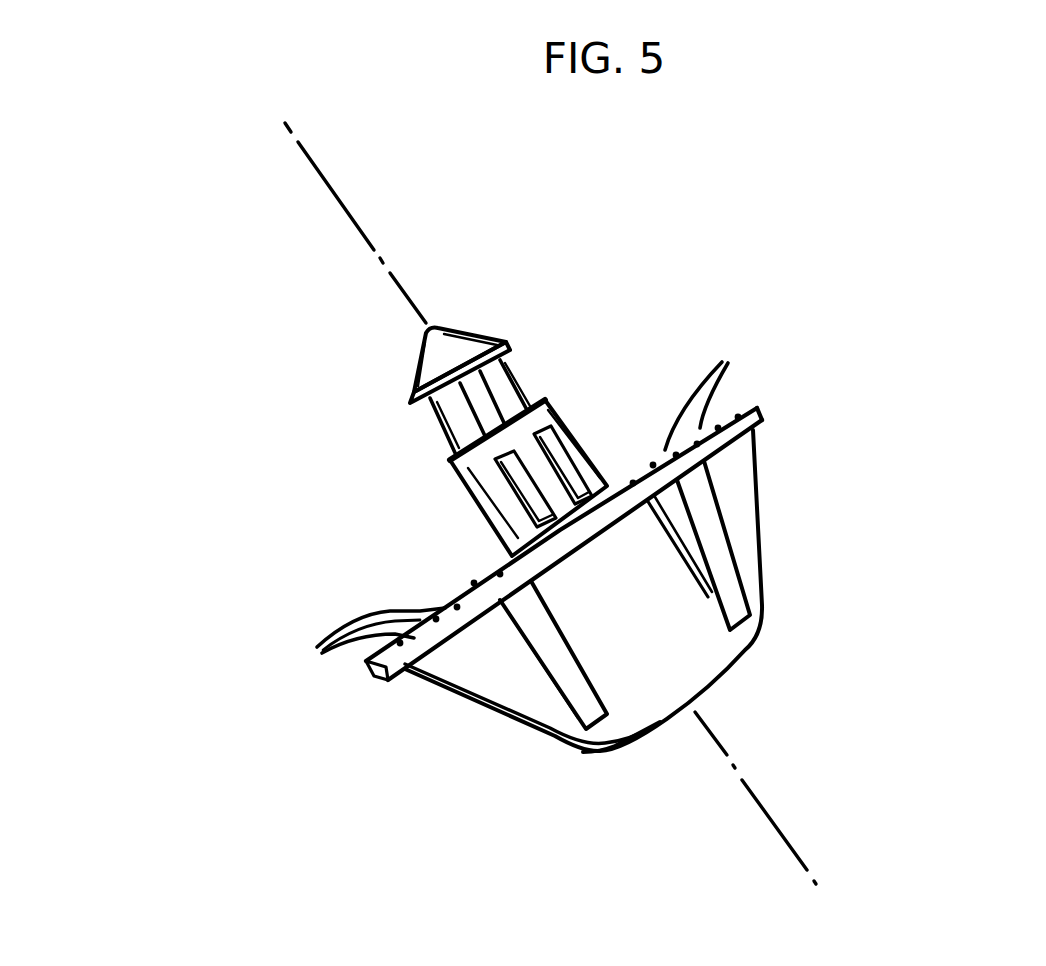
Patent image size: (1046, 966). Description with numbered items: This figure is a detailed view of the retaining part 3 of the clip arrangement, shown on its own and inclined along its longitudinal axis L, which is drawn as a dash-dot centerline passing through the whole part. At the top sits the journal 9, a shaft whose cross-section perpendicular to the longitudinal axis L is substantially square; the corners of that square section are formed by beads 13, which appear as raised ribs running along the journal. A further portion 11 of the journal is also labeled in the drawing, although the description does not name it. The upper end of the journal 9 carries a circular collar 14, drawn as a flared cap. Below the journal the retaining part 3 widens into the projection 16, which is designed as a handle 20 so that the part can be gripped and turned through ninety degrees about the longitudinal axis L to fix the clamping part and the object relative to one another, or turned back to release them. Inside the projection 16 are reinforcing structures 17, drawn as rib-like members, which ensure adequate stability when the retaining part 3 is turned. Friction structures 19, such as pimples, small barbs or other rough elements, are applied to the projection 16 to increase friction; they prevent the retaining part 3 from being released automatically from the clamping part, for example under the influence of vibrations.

The retaining part 3 is at (168, 364).
The journal 9 is at (441, 435).
The neck portion 11 is at (393, 432).
The beads 13 is at (446, 453).
The circular collar 14 is at (398, 365).
The projection 16 is at (490, 666).
The reinforcing structures 17 is at (691, 524).
The friction structures 19 is at (319, 649).
The handle 20 is at (653, 713).
The longitudinal axis L is at (770, 813).